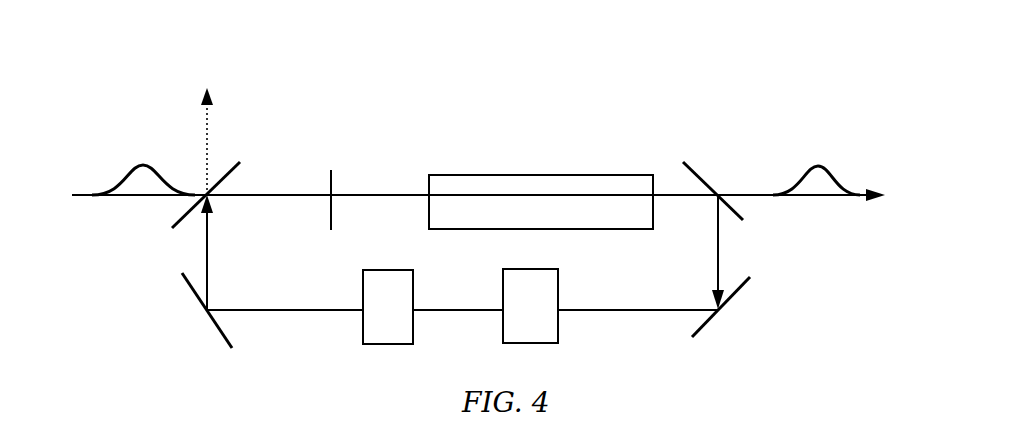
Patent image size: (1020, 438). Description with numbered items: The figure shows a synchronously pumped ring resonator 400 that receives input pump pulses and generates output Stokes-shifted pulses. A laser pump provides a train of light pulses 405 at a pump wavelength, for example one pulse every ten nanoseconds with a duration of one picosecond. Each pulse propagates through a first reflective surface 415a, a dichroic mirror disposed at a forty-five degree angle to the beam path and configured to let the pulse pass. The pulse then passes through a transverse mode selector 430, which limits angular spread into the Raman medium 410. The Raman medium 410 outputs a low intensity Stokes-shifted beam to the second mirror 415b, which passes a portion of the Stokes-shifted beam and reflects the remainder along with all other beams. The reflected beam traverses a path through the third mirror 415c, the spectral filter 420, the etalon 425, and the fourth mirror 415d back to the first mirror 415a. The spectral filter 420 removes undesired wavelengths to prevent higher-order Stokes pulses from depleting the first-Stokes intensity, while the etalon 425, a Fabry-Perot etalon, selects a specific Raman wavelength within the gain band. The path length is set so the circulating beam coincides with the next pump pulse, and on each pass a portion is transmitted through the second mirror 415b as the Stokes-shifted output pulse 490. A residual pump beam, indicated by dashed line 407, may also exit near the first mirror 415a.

The synchronously pumped ring resonator 400 is at (760, 86).
The train of light pulses 405 is at (108, 172).
The residual pump beam 407 is at (207, 130).
The Raman medium 410 is at (541, 202).
The first reflective surface 415a is at (230, 175).
The second mirror 415b is at (700, 175).
The third mirror 415c is at (737, 292).
The fourth mirror 415d is at (212, 325).
The spectral filter 420 is at (530, 306).
The etalon 425 is at (388, 307).
The transverse mode selector 430 is at (332, 178).
The output optical pulse 490 is at (840, 163).